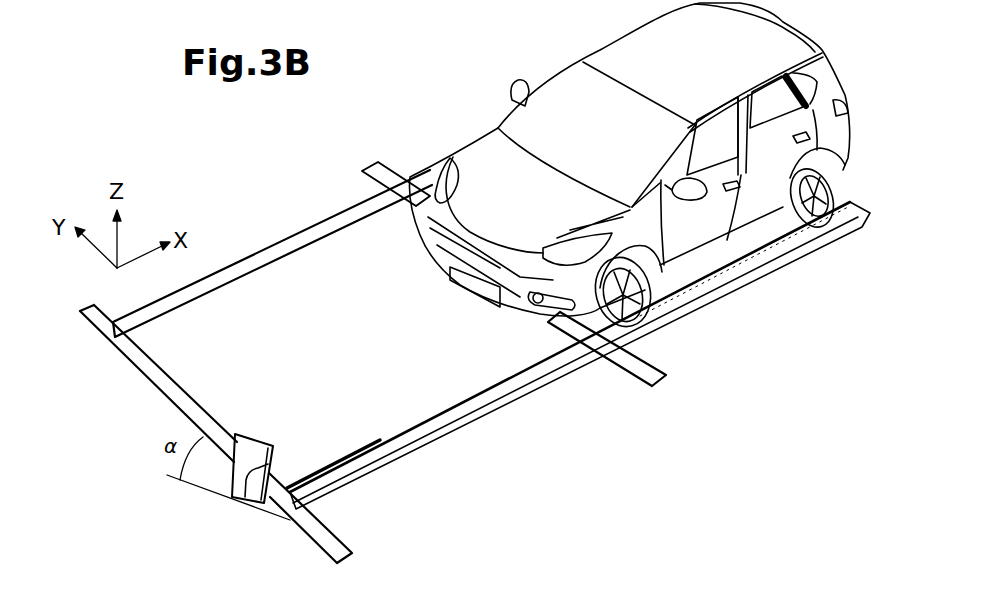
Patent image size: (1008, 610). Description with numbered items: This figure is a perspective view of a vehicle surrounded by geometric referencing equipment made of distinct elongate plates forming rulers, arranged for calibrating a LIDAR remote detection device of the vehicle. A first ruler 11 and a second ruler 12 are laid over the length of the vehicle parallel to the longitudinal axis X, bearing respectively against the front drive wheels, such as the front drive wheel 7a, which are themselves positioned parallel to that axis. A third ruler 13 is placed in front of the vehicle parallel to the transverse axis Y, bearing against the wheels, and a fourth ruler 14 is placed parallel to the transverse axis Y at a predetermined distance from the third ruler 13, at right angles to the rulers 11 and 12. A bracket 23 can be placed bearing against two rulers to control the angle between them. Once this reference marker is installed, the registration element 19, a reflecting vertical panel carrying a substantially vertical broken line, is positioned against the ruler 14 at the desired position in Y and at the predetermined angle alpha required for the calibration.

The front drive wheel 7a is at (655, 287).
The first ruler 11 is at (487, 413).
The second ruler 12 is at (282, 247).
The third ruler 13 is at (390, 155).
The fourth ruler 14 is at (150, 373).
The registration element 19 is at (233, 498).
The bracket 23 is at (320, 468).